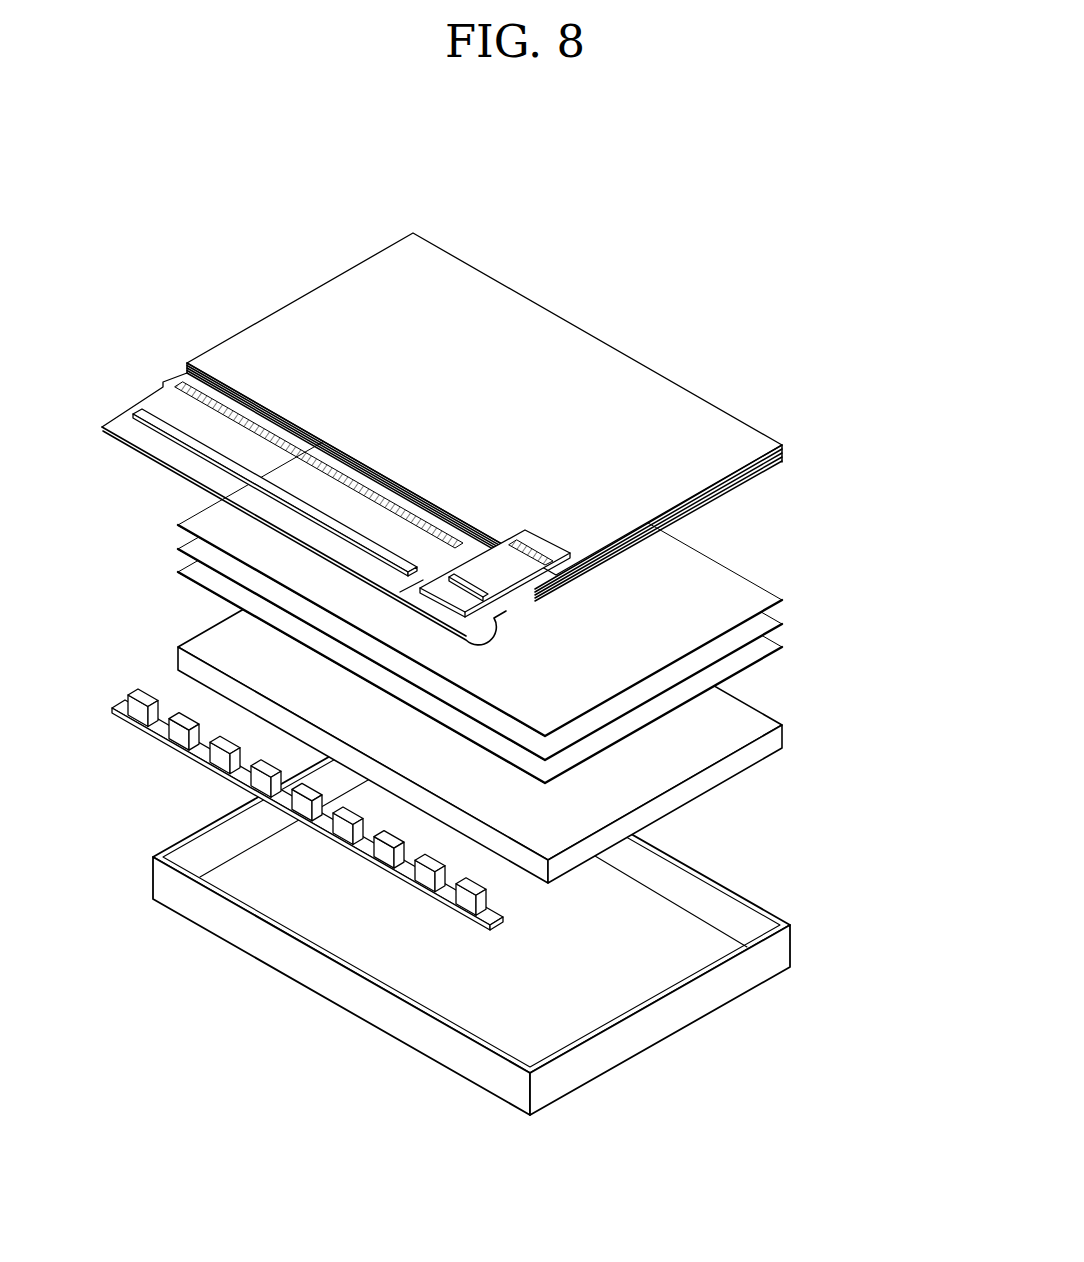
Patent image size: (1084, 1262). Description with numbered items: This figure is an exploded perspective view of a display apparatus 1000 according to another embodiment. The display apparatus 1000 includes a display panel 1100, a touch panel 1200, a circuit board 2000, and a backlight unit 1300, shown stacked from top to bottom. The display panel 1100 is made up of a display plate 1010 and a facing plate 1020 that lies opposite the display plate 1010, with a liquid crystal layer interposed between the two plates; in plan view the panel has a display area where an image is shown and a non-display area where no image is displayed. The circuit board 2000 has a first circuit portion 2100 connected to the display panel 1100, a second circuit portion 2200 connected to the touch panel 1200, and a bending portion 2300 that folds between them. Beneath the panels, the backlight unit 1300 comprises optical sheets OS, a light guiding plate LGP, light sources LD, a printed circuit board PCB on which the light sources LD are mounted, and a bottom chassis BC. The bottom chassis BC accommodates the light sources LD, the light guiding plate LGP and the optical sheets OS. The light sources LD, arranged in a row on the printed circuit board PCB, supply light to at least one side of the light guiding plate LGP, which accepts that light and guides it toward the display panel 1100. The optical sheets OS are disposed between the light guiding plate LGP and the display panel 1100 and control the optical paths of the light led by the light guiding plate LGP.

The display apparatus 1000 is at (507, 663).
The display panel 1100 is at (564, 417).
The display plate 1010 is at (782, 460).
The facing plate 1020 is at (782, 452).
The touch panel 1200 is at (715, 423).
The backlight unit 1300 is at (506, 752).
The circuit board 2000 is at (388, 428).
The first circuit portion 2100 is at (424, 546).
The second circuit portion 2200 is at (508, 557).
The bending portion 2300 is at (492, 620).
The optical sheets OS is at (505, 586).
The light guiding plate LGP is at (770, 744).
The printed circuit board PCB is at (123, 708).
The light sources LD is at (220, 757).
The bottom chassis BC is at (163, 882).